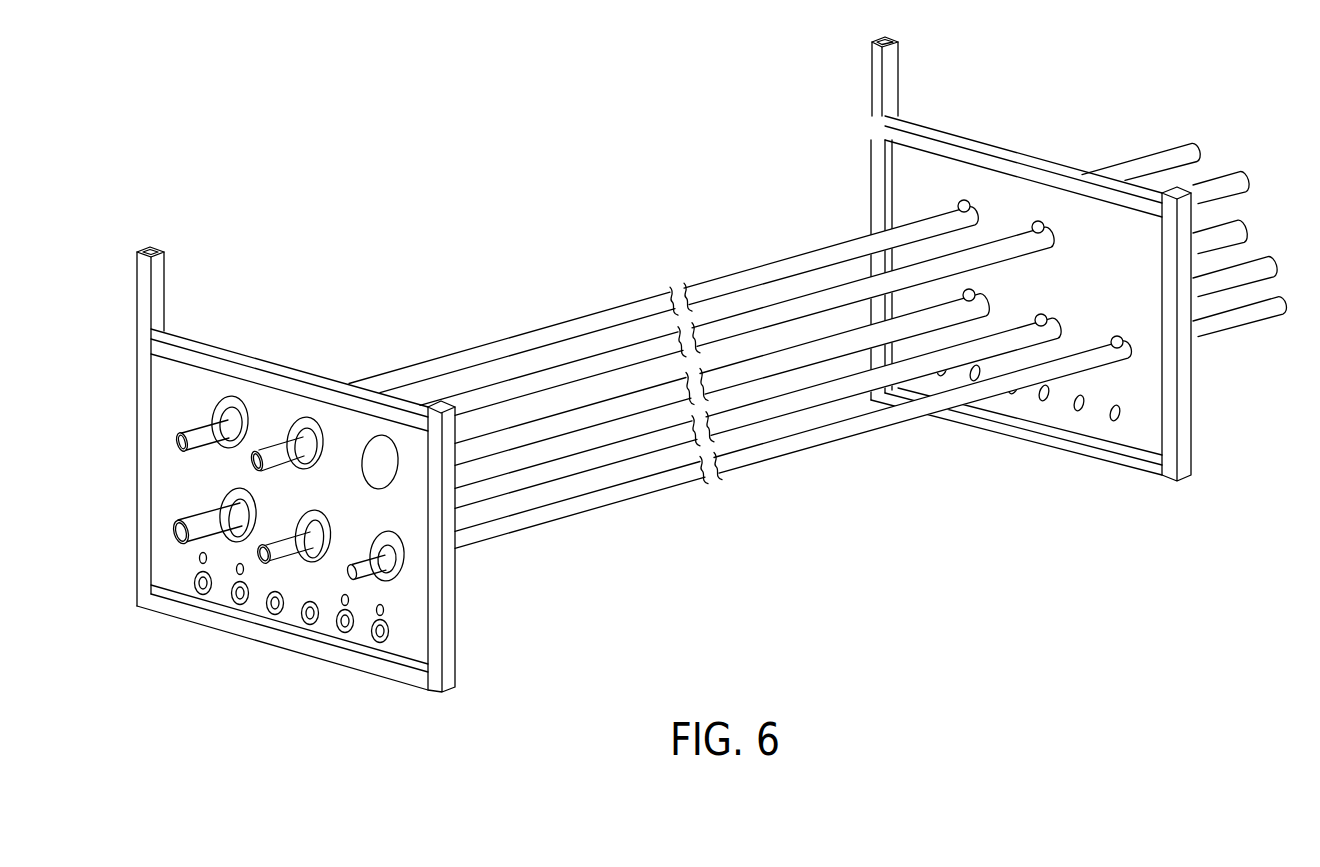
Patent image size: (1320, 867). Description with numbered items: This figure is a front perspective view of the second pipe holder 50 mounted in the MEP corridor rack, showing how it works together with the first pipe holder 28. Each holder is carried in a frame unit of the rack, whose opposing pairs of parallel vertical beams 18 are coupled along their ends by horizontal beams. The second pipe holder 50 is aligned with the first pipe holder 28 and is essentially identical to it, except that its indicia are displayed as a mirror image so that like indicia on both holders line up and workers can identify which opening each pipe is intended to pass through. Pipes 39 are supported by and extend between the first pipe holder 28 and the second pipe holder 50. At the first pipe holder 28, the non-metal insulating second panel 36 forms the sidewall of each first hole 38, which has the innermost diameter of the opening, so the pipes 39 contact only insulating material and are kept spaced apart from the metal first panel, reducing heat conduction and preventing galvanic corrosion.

The vertical beams 18 is at (163, 294).
The first pipe holder 28 is at (1021, 119).
The second panel 36 is at (1140, 400).
The first hole 38 is at (961, 201).
The pipes 39 is at (205, 445).
The second pipe holder 50 is at (299, 329).